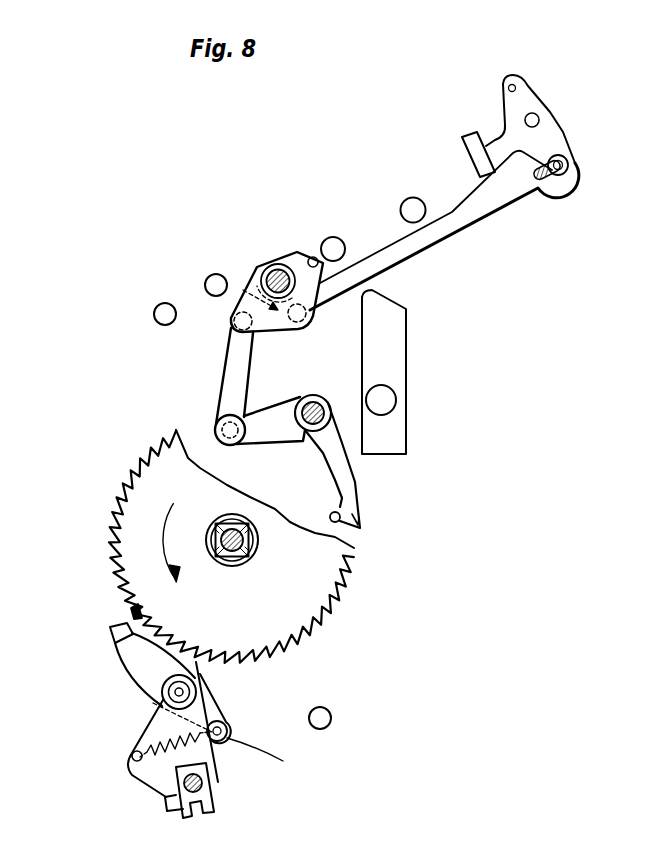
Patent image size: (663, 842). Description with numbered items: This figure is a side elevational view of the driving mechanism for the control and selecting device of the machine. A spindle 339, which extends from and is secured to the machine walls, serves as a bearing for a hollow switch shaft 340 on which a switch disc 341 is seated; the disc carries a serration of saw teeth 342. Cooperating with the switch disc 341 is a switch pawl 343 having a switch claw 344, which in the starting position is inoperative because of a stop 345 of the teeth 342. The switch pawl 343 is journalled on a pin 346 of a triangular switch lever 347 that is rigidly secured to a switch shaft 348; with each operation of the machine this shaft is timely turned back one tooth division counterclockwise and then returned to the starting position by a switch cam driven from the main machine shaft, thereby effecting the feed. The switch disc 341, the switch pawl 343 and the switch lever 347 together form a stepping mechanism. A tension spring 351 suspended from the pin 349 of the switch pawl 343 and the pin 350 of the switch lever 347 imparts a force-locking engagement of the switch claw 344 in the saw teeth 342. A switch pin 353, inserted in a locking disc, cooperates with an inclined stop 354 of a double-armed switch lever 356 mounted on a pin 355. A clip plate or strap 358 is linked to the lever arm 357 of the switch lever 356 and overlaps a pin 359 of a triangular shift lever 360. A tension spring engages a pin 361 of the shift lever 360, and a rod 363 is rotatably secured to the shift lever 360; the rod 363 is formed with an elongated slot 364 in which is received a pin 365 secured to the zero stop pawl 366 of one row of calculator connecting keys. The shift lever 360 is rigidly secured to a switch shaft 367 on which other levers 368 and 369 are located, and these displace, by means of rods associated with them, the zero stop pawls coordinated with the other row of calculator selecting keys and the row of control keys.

The spindle 339 is at (234, 556).
The hollow switch shaft 340 is at (250, 540).
The switch disc 341 is at (292, 614).
The saw teeth 342 is at (242, 652).
The switch pawl 343 is at (137, 671).
The switch claw 344 is at (128, 638).
The stop 345 is at (131, 613).
The pin 346 is at (228, 718).
The triangular switch lever 347 is at (154, 770).
The switch shaft 348 is at (214, 792).
The pin 349 is at (273, 756).
The pin 350 is at (132, 755).
The tension spring 351 is at (146, 730).
The switch pin 353 is at (340, 521).
The inclined stop 354 is at (345, 517).
The pin 355 is at (325, 412).
The double-armed switch lever 356 is at (348, 473).
The lever arm 357 is at (268, 430).
The clip plate or strap 358 is at (230, 383).
The pin 359 is at (229, 317).
The triangular shift lever 360 is at (297, 258).
The pin 361 is at (314, 257).
The rod 363 is at (448, 226).
The elongated slot 364 is at (538, 185).
The pin 365 is at (567, 178).
The zero stop pawl 366 is at (515, 105).
The switch shaft 367 is at (274, 270).
The lever 368 is at (260, 290).
The lever 369 is at (260, 300).